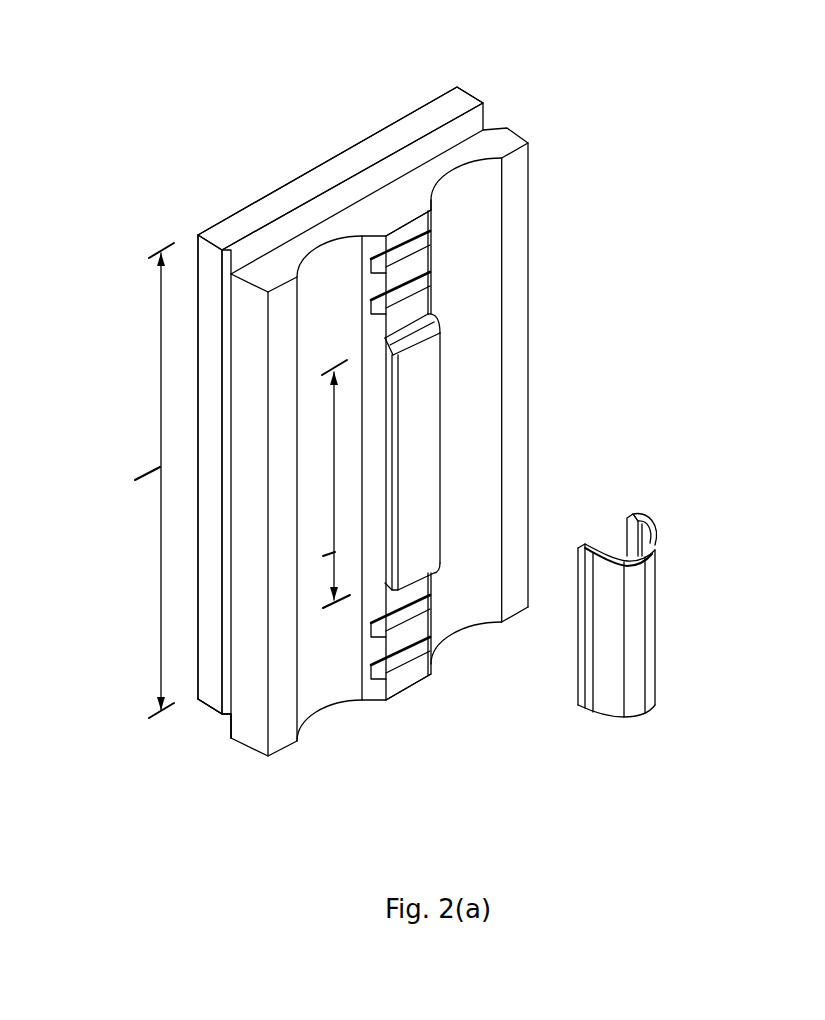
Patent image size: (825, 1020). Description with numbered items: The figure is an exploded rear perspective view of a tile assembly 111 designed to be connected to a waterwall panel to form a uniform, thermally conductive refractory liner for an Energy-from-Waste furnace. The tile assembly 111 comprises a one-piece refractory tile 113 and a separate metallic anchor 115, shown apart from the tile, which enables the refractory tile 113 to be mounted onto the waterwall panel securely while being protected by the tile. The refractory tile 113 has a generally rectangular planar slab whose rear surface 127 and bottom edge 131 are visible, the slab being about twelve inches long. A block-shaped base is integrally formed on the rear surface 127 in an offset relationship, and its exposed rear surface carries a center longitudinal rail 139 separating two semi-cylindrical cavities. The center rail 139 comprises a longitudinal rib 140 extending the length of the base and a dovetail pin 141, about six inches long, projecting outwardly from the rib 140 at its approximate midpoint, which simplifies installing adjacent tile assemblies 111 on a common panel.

The tile assembly 111 is at (272, 86).
The refractory tile 113 is at (567, 82).
The metallic anchor 115 is at (705, 732).
The rear surface 127 is at (262, 243).
The bottom edge 131 is at (213, 712).
The center longitudinal rail 139 is at (440, 290).
The longitudinal rib 140 is at (408, 218).
The dovetail pin 141 is at (430, 420).